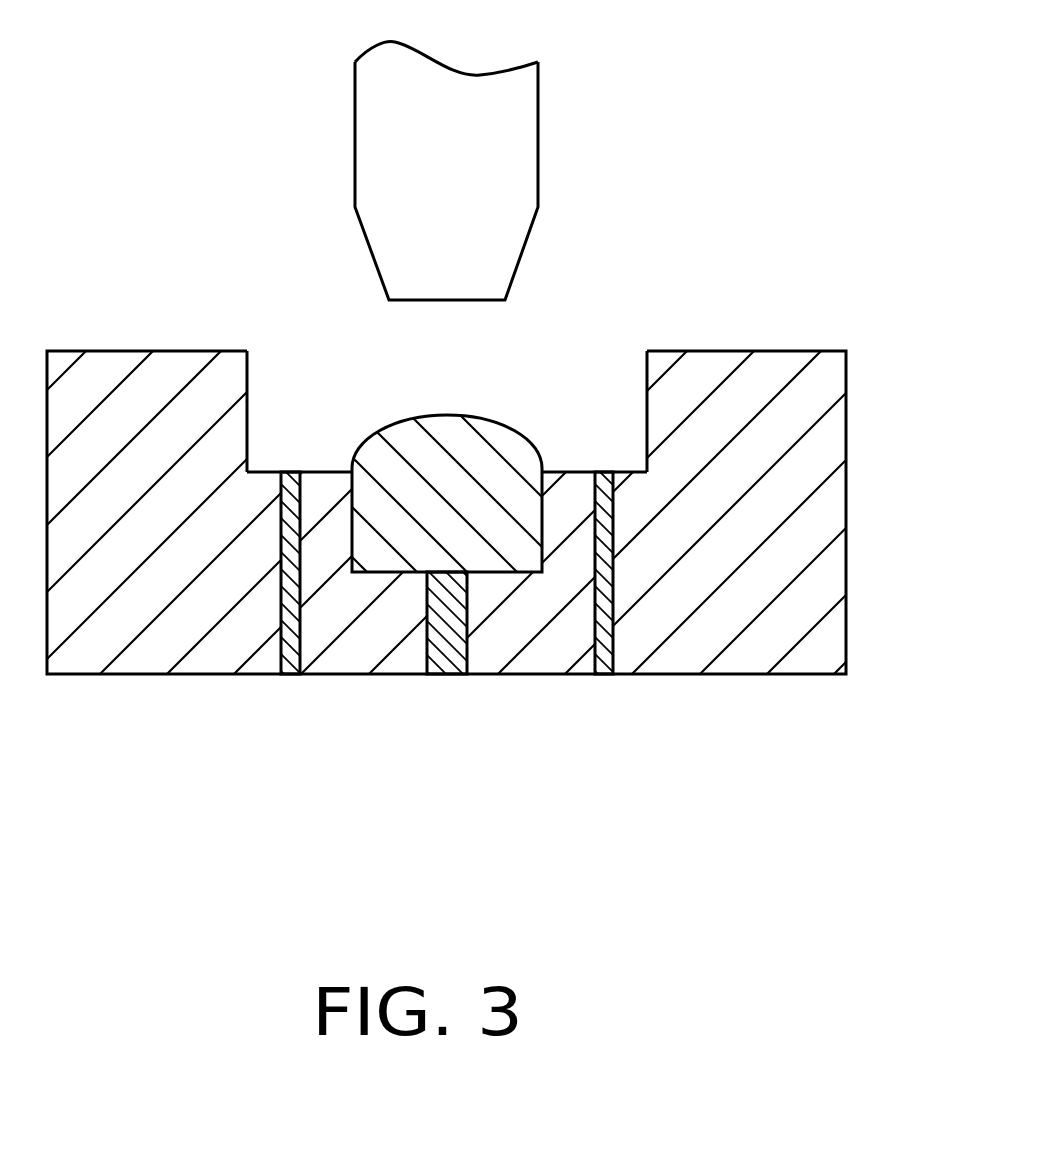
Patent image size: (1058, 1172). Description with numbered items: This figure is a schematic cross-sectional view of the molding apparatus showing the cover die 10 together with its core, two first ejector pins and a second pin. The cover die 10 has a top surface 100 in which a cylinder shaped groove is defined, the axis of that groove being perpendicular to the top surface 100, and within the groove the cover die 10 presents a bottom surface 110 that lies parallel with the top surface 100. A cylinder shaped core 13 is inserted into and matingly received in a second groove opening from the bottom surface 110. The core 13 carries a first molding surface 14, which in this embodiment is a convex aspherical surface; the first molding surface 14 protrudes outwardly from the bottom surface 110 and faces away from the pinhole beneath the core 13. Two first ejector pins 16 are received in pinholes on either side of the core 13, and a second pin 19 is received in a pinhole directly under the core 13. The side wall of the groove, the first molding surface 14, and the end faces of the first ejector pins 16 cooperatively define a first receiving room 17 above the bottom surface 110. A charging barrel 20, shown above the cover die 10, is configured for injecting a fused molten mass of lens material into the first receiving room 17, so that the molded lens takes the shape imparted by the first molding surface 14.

The top surface 100 is at (529, 496).
The cover die 10 is at (815, 587).
The first receiving room 17 is at (414, 349).
The bottom surface 110 is at (329, 468).
The core 13 is at (420, 508).
The first molding surface 14 is at (520, 432).
The first ejector pins 16 is at (289, 655).
The second pin 19 is at (448, 653).
The charging barrel 20 is at (513, 128).